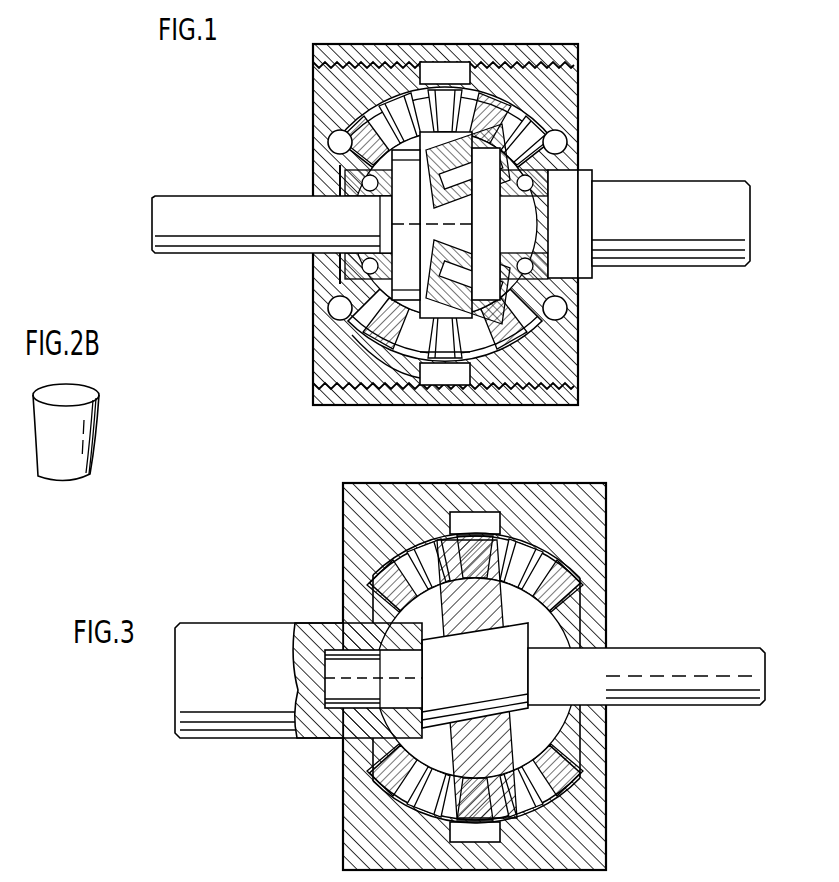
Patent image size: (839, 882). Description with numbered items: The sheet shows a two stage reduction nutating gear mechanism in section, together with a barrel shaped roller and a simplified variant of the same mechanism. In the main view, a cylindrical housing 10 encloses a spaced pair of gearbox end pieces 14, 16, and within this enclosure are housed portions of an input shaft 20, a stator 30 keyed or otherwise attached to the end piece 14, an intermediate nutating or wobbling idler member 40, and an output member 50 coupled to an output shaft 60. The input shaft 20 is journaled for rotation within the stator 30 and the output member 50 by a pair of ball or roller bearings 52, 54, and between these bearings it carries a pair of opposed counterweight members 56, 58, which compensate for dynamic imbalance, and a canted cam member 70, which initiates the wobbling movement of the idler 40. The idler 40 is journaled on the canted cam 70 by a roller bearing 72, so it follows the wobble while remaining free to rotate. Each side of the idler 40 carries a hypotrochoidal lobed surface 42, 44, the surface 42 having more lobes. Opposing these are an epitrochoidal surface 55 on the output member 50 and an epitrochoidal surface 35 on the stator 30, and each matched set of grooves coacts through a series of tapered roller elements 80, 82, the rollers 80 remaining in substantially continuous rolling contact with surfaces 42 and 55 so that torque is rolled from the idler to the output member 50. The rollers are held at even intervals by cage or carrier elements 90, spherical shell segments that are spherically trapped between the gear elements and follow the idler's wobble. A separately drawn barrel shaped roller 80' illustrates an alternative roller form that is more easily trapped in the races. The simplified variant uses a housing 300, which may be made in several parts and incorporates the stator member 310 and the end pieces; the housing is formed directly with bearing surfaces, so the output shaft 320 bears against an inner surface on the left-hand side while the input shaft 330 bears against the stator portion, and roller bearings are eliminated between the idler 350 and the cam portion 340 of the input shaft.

In FIG. 1, the cylindrical housing 10 is at (436, 205).
In FIG. 1, the gearbox end piece 14 is at (328, 86).
In FIG. 1, the gearbox end piece 16 is at (584, 82).
In FIG. 1, the input shaft 20 is at (235, 212).
In FIG. 1, the stator 30 is at (322, 300).
In FIG. 1, the epitrochoidal surface 35 is at (380, 388).
In FIG. 1, the intermediate nutating idler member 40 is at (447, 360).
In FIG. 1, the undulating lobed surface 42 is at (452, 95).
In FIG. 1, the undulating lobed surface 44 is at (432, 365).
In FIG. 1, the output member 50 is at (580, 167).
In FIG. 1, the bearing 52 is at (360, 267).
In FIG. 1, the bearing 54 is at (588, 278).
In FIG. 1, the epitrochoidal surface 55 is at (584, 94).
In FIG. 1, the counterweight member 56 is at (398, 204).
In FIG. 1, the counterweight member 58 is at (494, 208).
In FIG. 1, the output shaft 60 is at (683, 190).
In FIG. 1, the canted cam member 70 is at (446, 284).
In FIG. 1, the roller bearing 72 is at (432, 190).
In FIG. 1, the tapered roller element 80 is at (489, 299).
In FIG. 1, the tapered roller element 82 is at (400, 372).
In FIG. 1, the cage or carrier element 90 is at (400, 100).
In FIG. 2B, the barrel shaped roller 80' is at (87, 432).
In FIG. 3, the housing 300 is at (596, 528).
In FIG. 3, the stator member 310 is at (590, 592).
In FIG. 3, the output shaft 320 is at (252, 642).
In FIG. 3, the input shaft 330 is at (675, 660).
In FIG. 3, the cam portion 340 is at (460, 669).
In FIG. 3, the idler 350 is at (472, 620).